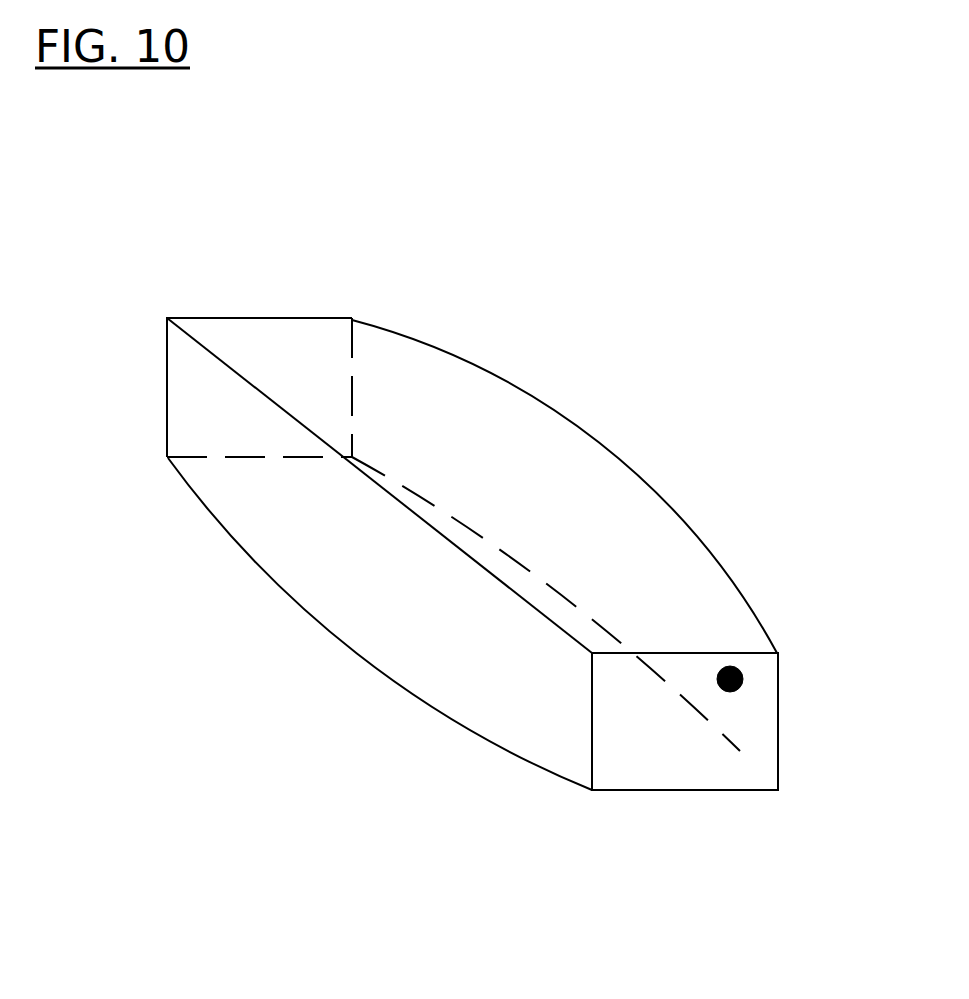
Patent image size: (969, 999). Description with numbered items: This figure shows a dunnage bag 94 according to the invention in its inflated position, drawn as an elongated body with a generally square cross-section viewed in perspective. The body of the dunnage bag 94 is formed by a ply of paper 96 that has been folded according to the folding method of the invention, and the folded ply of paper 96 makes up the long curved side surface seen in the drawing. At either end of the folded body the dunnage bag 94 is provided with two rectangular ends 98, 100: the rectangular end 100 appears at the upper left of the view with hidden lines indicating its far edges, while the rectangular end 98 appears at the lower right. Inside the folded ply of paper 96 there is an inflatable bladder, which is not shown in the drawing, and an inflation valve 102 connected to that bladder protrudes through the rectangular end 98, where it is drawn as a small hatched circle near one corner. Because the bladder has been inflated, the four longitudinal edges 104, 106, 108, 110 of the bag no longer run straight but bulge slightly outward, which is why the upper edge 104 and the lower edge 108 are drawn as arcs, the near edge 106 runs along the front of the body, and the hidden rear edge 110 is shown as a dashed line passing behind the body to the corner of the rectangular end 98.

The dunnage bag 94 is at (836, 132).
The ply of paper 96 is at (628, 533).
The rectangular end 98 is at (655, 767).
The rectangular end 100 is at (282, 363).
The inflation valve 102 is at (745, 681).
The edge 104 is at (473, 370).
The edge 106 is at (360, 475).
The edge 108 is at (340, 637).
The edge 110 is at (601, 623).